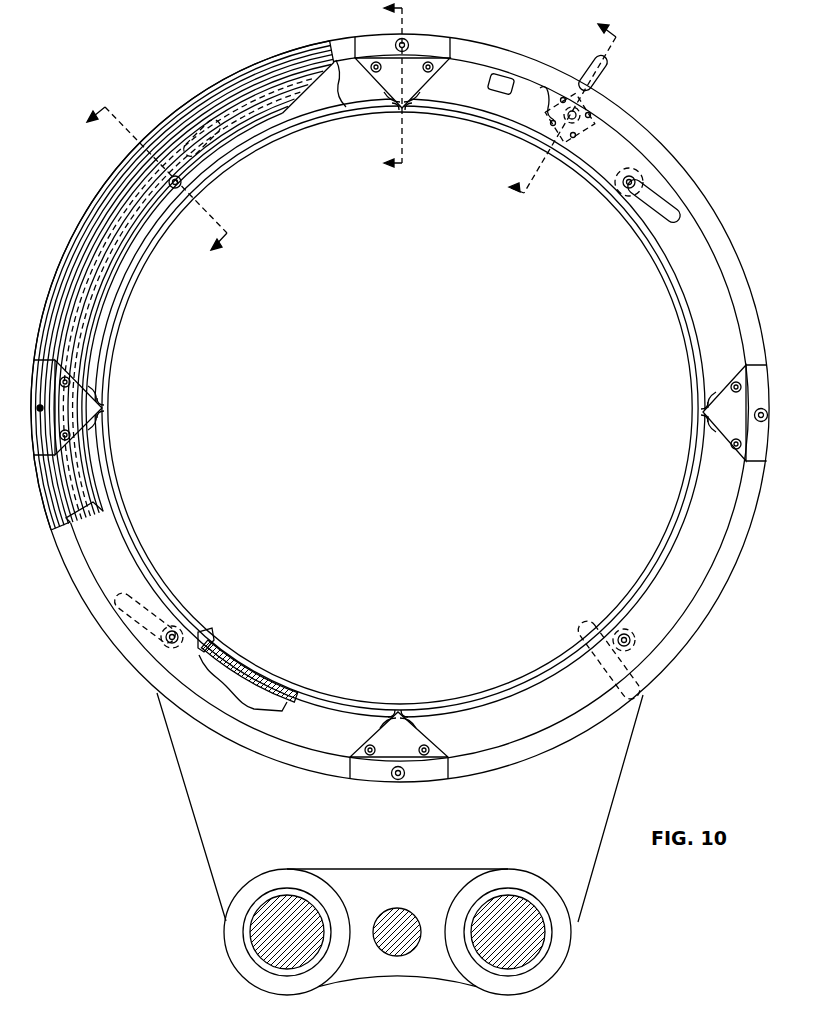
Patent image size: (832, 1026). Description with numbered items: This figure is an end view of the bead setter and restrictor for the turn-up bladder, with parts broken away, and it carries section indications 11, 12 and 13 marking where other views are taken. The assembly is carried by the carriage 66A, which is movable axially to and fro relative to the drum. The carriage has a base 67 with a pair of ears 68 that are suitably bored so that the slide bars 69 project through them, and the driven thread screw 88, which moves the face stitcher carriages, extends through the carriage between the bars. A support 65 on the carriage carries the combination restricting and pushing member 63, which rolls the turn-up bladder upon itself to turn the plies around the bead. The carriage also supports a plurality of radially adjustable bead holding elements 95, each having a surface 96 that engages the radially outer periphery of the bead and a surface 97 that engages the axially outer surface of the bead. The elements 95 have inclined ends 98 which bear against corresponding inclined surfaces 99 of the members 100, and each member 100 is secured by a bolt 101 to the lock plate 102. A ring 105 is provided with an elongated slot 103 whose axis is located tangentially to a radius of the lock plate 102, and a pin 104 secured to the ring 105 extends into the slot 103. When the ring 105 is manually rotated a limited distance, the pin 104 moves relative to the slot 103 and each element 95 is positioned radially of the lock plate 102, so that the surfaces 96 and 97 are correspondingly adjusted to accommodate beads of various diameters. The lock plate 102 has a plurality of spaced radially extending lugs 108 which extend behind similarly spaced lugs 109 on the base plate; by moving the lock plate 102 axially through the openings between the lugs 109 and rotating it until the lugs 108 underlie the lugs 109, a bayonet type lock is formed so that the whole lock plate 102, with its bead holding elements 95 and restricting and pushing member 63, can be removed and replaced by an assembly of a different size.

The combination restricting and pushing member 63 is at (218, 86).
The support 65 is at (188, 707).
The carriage 66A is at (204, 836).
The base 67 is at (240, 894).
The ears 68 is at (237, 952).
The slide bars 69 is at (267, 957).
The driven thread screw 88 is at (395, 948).
The bead holding elements 95 is at (313, 118).
The surface 96 is at (698, 345).
The surface 97 is at (703, 370).
The inclined ends 98 is at (722, 445).
The inclined surfaces 99 is at (418, 112).
The members 100 is at (418, 95).
The bolt 101 is at (431, 66).
The lock plate 102 is at (549, 96).
The elongated slot 103 is at (204, 160).
The pin 104 is at (180, 184).
The ring 105 is at (661, 245).
The lugs 108 is at (245, 672).
The lugs 109 is at (207, 643).
The section line 11- 11 is at (145, 187).
The section line 12- 12 is at (549, 104).
The section line 13- 13 is at (378, 87).